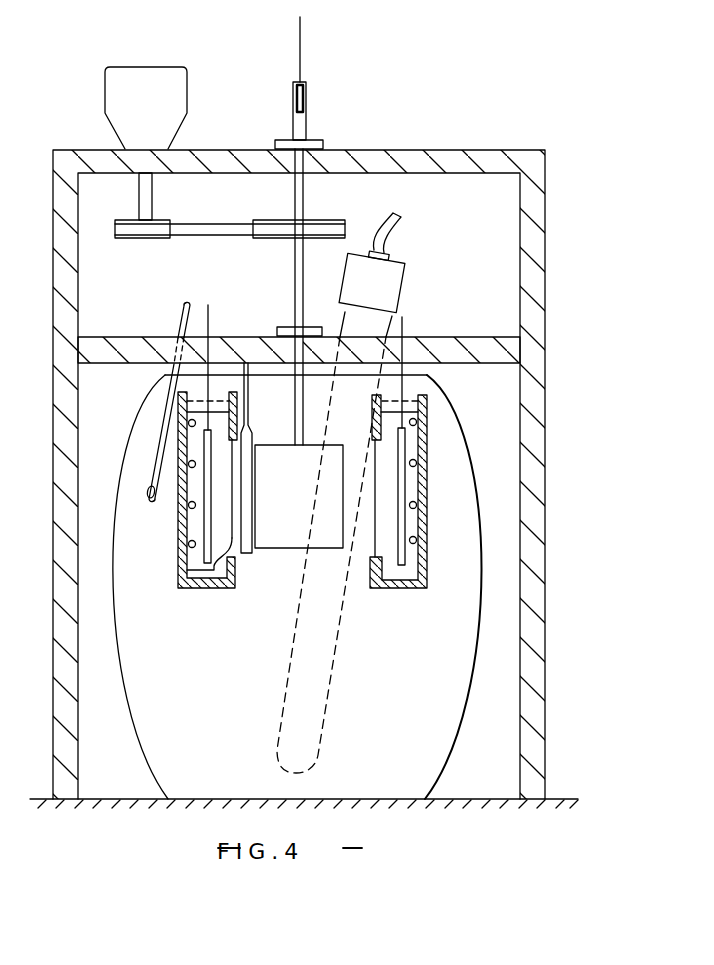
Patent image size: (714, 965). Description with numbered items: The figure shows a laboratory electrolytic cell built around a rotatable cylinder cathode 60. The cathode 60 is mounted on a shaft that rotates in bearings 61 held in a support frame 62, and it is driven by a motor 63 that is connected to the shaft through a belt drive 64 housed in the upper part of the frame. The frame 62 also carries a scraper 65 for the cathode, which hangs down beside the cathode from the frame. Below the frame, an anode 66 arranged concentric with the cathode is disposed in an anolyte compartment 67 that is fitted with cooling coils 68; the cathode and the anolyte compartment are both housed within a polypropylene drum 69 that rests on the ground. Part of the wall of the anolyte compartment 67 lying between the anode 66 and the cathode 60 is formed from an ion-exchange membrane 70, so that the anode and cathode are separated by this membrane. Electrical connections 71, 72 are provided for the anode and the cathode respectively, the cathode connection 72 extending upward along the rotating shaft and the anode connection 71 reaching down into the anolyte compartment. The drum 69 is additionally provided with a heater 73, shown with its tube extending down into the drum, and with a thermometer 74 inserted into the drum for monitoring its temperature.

The rotatable cylinder cathode 60 is at (287, 533).
The bearings 61 is at (318, 140).
The support frame 62 is at (480, 150).
The motor 63 is at (157, 109).
The belt drive 64 is at (245, 222).
The scraper 65 is at (249, 386).
The anode 66 is at (204, 524).
The anolyte compartment 67 is at (427, 580).
The cooling coils 68 is at (416, 425).
The polypropylene drum 69 is at (132, 722).
The ion-exchange membrane 70 is at (183, 570).
The electrical connection for the anode 71 is at (406, 332).
The electrical connection for the cathode 72 is at (300, 44).
The heater 73 is at (400, 293).
The thermometer 74 is at (181, 320).